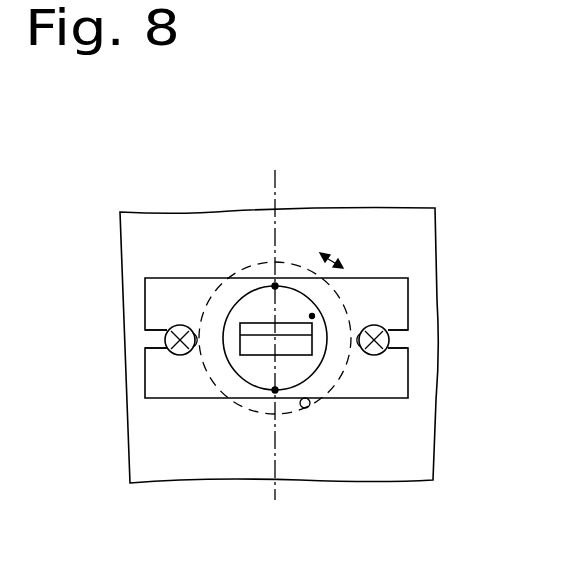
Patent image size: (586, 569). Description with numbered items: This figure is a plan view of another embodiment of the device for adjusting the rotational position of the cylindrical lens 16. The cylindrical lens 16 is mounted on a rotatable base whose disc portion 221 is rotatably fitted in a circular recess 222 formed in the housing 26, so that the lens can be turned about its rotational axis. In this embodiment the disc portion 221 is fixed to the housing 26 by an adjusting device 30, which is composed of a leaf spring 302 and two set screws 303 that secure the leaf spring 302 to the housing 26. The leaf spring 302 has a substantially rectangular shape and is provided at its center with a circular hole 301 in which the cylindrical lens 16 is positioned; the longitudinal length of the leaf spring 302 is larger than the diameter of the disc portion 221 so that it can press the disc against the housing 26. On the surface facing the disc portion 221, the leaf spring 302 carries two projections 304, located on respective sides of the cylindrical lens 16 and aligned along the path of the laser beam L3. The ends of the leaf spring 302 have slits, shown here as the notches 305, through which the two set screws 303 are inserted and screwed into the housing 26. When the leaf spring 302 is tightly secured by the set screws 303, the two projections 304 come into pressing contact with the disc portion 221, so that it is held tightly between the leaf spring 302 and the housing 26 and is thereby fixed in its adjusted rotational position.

The cylindrical lens 16 is at (255, 345).
The housing 26 is at (418, 449).
The adjusting device 30 is at (389, 278).
The disc portion 221 is at (294, 262).
The circular recess 222 is at (305, 408).
The circular hole 301 is at (313, 316).
The leaf spring 302 is at (176, 290).
The set screws 303 is at (165, 340).
The projections 304 is at (273, 284).
The notch 305 is at (157, 335).
The laser beam L3 is at (275, 188).